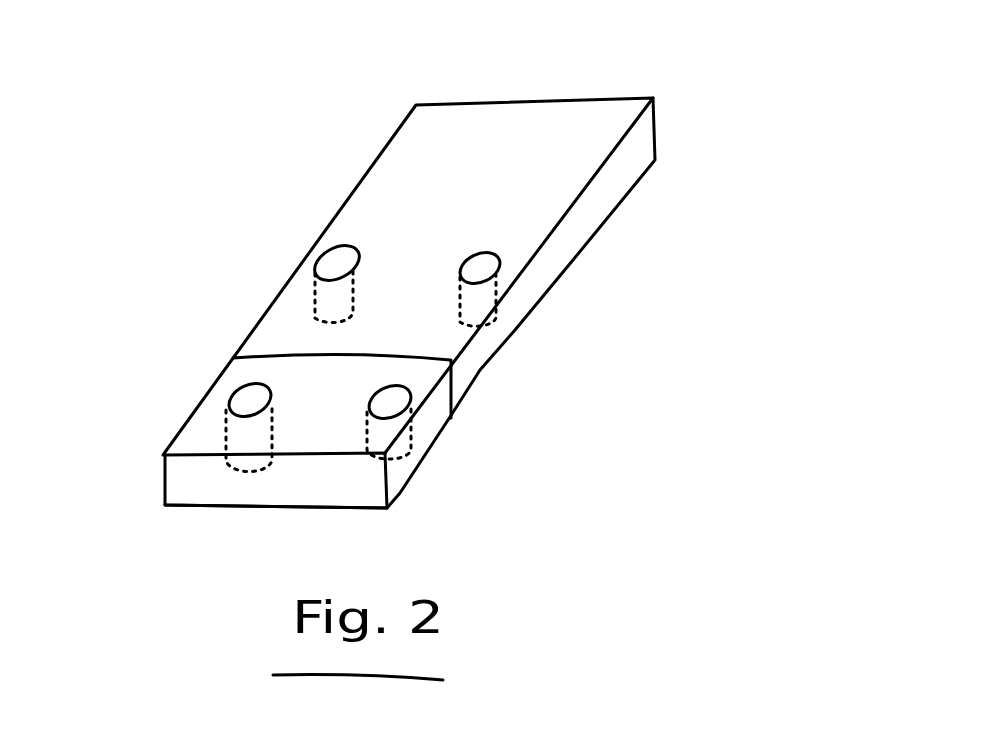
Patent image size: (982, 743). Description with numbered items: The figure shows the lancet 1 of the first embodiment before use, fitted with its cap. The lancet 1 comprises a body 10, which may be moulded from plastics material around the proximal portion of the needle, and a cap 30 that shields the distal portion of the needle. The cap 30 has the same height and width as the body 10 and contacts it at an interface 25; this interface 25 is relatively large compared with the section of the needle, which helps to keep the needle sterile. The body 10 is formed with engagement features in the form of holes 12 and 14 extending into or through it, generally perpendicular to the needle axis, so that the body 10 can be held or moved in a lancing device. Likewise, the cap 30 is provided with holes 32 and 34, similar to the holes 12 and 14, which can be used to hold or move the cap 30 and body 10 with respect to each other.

The lancet 1 is at (166, 282).
The body 10 is at (552, 117).
The hole 12 is at (327, 250).
The hole 14 is at (500, 262).
The interface 25 is at (455, 386).
The cap 30 is at (192, 494).
The hole 32 is at (235, 405).
The hole 34 is at (413, 402).